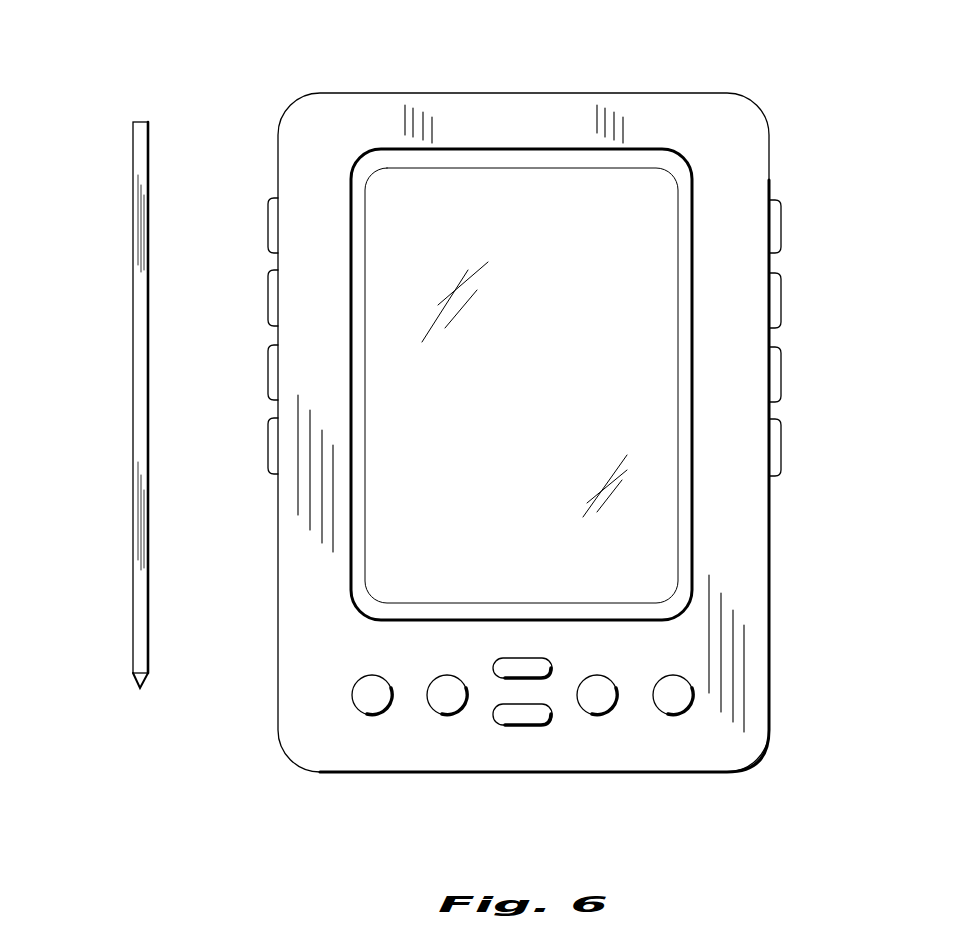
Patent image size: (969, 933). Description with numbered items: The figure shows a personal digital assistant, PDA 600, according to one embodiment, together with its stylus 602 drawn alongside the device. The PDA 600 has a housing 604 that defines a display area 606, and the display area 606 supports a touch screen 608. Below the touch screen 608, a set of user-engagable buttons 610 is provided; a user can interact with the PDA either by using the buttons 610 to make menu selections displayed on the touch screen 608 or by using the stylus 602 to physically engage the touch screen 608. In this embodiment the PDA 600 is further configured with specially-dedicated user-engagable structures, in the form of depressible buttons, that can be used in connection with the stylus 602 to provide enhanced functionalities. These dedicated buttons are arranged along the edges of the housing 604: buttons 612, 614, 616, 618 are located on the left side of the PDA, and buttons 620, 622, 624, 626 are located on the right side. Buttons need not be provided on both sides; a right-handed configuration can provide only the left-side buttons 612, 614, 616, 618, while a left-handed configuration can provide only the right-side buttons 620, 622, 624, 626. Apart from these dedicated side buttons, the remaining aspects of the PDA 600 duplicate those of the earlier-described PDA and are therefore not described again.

The PDA 600 is at (368, 38).
The stylus 602 is at (130, 118).
The housing 604 is at (522, 92).
The display area 606 is at (522, 148).
The touch screen 608 is at (542, 397).
The user-engagable buttons 610 is at (382, 665).
The button 612 is at (268, 222).
The button 614 is at (268, 295).
The button 616 is at (268, 369).
The button 618 is at (268, 442).
The button 620 is at (781, 226).
The button 622 is at (781, 299).
The button 624 is at (781, 372).
The button 626 is at (781, 446).